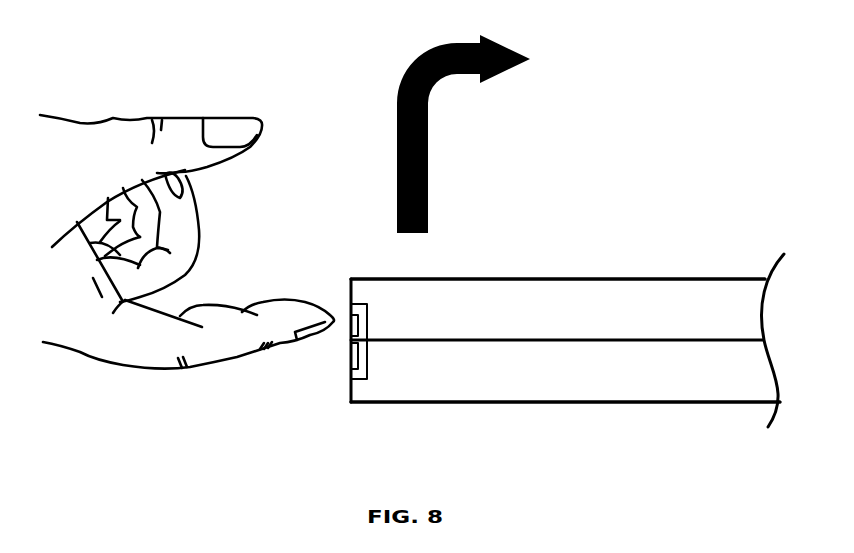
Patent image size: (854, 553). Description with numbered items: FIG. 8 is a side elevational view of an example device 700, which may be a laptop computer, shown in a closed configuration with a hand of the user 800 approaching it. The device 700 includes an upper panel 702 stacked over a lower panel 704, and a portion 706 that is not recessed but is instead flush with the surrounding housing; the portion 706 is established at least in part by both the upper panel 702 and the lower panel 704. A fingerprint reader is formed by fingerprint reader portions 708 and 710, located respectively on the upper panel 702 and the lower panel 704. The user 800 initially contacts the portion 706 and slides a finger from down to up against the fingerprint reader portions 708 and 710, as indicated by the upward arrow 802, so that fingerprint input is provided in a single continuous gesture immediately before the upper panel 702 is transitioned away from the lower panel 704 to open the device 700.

The device 700 is at (567, 292).
The upper panel 702 is at (642, 278).
The lower panel 704 is at (633, 403).
The portion 706 is at (367, 304).
The fingerprint reader portion 708 is at (358, 327).
The fingerprint reader portion 710 is at (358, 356).
The user 800 is at (240, 361).
The gesture direction arrow 802 is at (415, 60).